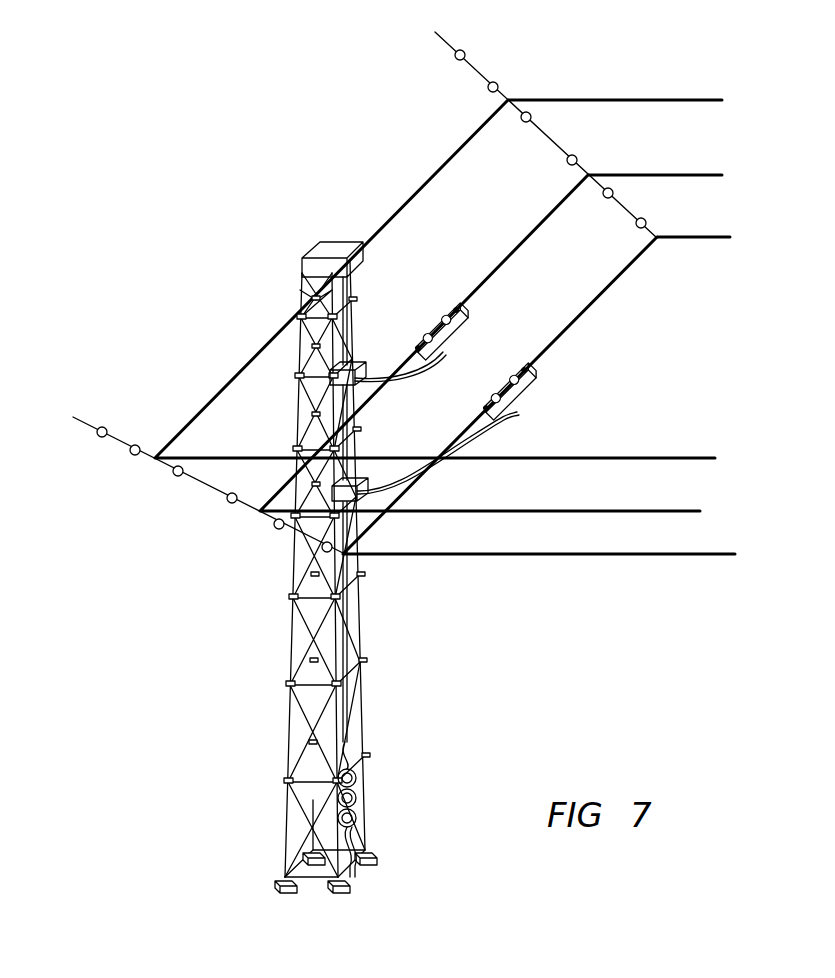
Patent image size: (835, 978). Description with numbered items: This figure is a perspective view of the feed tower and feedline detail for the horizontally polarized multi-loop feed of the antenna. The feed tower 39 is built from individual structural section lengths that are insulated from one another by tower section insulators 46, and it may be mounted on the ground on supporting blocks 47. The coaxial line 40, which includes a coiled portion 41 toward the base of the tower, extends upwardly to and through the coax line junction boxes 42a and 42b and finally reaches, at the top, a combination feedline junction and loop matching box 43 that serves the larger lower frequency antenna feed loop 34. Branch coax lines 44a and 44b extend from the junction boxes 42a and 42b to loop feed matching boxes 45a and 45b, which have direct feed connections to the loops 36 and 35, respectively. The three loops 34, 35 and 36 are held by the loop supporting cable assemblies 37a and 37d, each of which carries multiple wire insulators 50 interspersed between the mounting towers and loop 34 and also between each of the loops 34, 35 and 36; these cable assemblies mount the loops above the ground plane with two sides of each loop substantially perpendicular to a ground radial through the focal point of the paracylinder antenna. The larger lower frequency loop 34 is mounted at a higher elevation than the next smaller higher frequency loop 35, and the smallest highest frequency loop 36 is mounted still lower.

The antenna feed loop 34 is at (642, 100).
The antenna feed loop 35 is at (666, 175).
The antenna feed loop 36 is at (682, 237).
The loop supporting cable assembly 37a is at (503, 99).
The loop supporting cable assembly 37d is at (206, 490).
The feed tower 39 is at (300, 297).
The coaxial line 40 is at (350, 684).
The coiled portion 41 is at (358, 781).
The coax line junction box 42a is at (362, 486).
The coax line junction box 42b is at (356, 366).
The combination feedline junction and loop matching box 43 is at (352, 242).
The branch coax line 44a is at (504, 431).
The branch coax line 44b is at (409, 374).
The loop feed matching box 45a is at (540, 396).
The loop feed matching box 45b is at (468, 334).
The tower section insulators 46 is at (312, 576).
The supporting blocks 47 is at (306, 853).
The wire insulators 50 is at (464, 54).